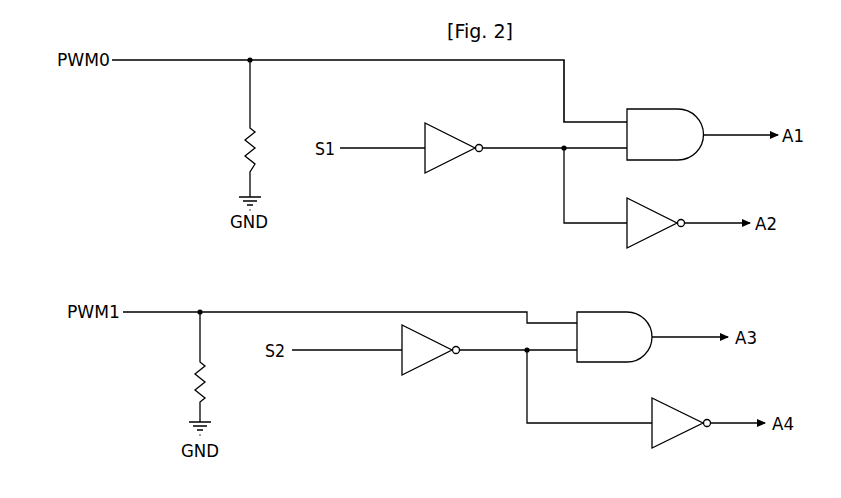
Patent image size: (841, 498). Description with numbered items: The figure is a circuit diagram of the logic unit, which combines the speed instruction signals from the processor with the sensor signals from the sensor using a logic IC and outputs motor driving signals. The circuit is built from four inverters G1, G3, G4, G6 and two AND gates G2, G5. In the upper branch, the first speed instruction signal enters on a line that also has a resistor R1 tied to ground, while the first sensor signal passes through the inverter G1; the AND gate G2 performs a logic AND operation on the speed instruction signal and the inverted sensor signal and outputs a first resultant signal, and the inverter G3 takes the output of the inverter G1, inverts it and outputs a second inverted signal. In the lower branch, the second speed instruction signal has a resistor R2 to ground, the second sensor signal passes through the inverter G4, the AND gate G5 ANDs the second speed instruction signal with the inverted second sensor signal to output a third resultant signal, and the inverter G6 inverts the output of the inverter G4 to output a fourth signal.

The pull-down resistor on PWM0 R1 is at (239, 135).
The pull-down resistor on PWM1 R2 is at (189, 373).
The inverter G1 is at (526, 157).
The AND gate G2 is at (702, 124).
The inverter G3 is at (688, 233).
The inverter G4 is at (489, 359).
The AND gate G5 is at (652, 327).
The inverter G6 is at (708, 430).